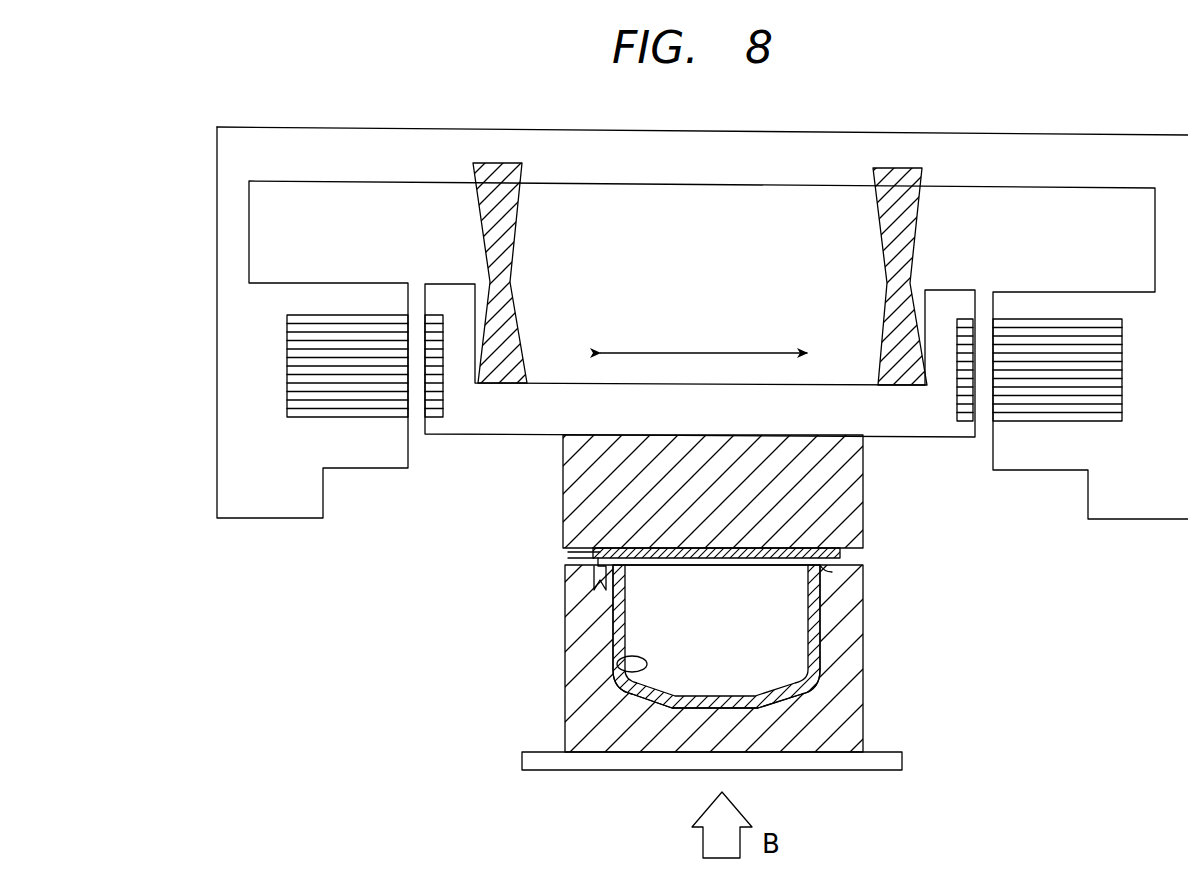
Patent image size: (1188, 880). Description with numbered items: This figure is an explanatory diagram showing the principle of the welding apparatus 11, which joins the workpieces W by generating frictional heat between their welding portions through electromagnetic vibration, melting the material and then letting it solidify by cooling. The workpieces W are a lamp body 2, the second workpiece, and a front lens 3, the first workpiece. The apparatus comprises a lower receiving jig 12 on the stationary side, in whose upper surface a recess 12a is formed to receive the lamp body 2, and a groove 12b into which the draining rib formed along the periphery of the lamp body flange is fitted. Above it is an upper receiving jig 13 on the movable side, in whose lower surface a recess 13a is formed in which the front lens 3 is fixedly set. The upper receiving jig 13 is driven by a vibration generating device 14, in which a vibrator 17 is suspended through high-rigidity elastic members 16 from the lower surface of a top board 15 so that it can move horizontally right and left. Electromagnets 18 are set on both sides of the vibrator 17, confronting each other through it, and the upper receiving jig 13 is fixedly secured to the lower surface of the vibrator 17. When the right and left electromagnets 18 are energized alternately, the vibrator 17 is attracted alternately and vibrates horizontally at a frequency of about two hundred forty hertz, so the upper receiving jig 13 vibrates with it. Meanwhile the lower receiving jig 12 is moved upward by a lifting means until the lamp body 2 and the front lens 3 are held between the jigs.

The welding apparatus 11 is at (452, 93).
The vibration generating device 14 is at (958, 230).
The top board 15 is at (686, 130).
The high-rigidity elastic member 16 is at (513, 248).
The vibrator 17 is at (516, 418).
The electromagnet 18 is at (287, 366).
The upper receiving jig 13 is at (863, 490).
The recess 13a is at (838, 548).
The lower receiving jig 12 is at (714, 658).
The recess 12a is at (620, 665).
The groove 12b is at (820, 566).
The workpiece W is at (679, 629).
The lamp body 2 is at (620, 618).
The front lens 3 is at (597, 551).